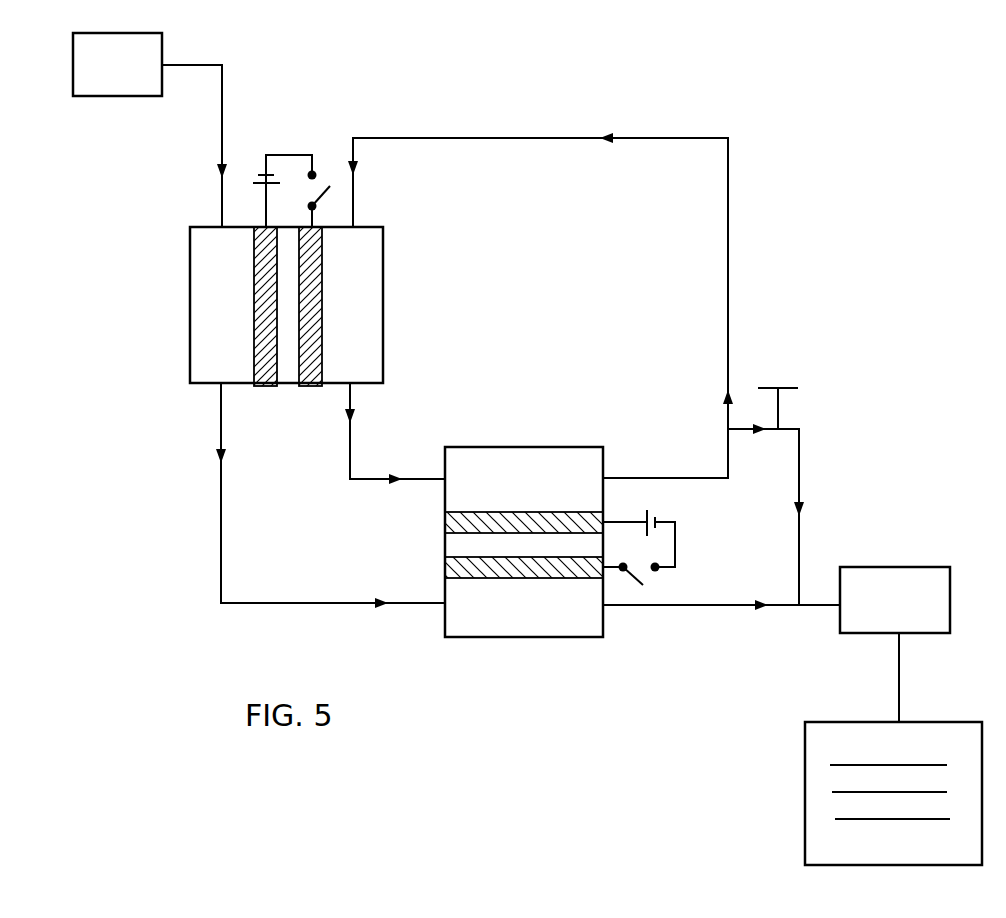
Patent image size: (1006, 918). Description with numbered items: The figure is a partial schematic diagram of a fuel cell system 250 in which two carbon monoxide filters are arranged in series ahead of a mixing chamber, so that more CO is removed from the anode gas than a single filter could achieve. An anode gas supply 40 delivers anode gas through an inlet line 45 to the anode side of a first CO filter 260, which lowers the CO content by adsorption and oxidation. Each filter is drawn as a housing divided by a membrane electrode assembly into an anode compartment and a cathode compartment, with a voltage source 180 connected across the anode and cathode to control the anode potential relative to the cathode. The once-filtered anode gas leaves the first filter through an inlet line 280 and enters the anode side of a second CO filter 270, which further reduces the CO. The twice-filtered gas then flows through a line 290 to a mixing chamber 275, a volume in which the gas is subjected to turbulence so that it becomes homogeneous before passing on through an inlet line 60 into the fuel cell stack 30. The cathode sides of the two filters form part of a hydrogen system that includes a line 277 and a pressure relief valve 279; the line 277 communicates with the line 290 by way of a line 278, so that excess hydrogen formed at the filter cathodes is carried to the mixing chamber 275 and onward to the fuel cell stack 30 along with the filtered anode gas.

The fuel cell system 250 is at (619, 725).
The anode gas supply 40 is at (143, 96).
The inlet line 45 is at (222, 100).
The voltage source 180 is at (298, 133).
The CO filter 260 is at (338, 306).
The inlet line 280 is at (313, 605).
The CO filter 270 is at (524, 572).
The line 277 is at (728, 286).
The line 278 is at (735, 429).
The pressure relief valve 279 is at (787, 388).
The line 290 is at (717, 606).
The mixing chamber 275 is at (910, 567).
The inlet line 60 is at (899, 666).
The fuel cell stack 30 is at (805, 808).